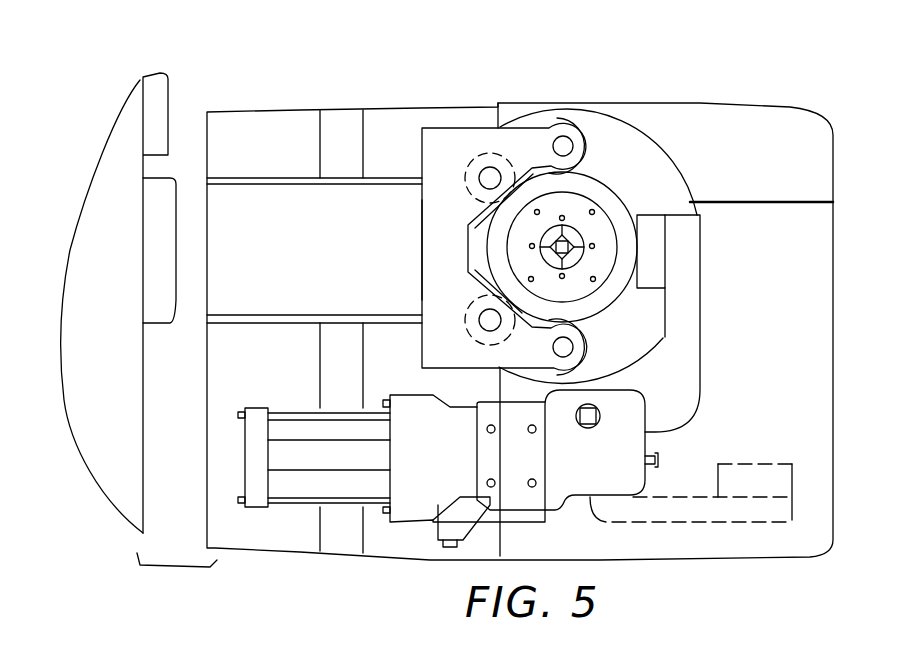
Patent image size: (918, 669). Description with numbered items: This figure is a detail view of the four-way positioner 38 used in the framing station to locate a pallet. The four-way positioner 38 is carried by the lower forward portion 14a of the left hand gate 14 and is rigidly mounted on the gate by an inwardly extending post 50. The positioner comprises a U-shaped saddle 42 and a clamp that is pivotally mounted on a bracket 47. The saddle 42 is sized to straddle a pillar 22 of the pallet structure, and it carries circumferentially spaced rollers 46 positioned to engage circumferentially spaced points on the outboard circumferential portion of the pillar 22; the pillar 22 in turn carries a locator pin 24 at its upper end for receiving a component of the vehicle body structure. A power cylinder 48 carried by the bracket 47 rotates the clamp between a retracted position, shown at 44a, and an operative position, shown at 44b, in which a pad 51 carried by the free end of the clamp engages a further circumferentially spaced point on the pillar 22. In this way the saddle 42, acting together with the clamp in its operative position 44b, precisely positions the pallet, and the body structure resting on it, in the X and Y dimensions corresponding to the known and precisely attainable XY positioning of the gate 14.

The left hand gate 14 is at (119, 155).
The lower forward portion of the gate structure 14a is at (128, 318).
The inwardly extending post 50 is at (243, 178).
The four-way positioner 38 is at (444, 120).
The U-shaped saddle 42 is at (420, 251).
The rollers 46 is at (561, 118).
The pillar 22 is at (603, 185).
The locator pin 24 is at (584, 237).
The pad 51 is at (652, 272).
The operative position of the clamp 44b is at (687, 328).
The bracket 47 is at (625, 442).
The power cylinder 48 is at (297, 427).
The retracted position of the clamp 44a is at (698, 512).